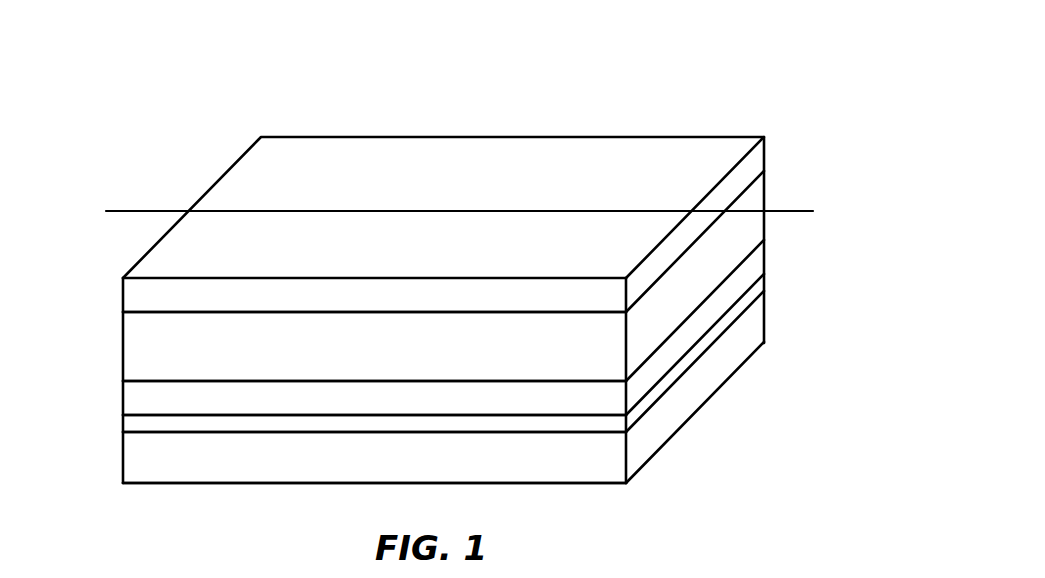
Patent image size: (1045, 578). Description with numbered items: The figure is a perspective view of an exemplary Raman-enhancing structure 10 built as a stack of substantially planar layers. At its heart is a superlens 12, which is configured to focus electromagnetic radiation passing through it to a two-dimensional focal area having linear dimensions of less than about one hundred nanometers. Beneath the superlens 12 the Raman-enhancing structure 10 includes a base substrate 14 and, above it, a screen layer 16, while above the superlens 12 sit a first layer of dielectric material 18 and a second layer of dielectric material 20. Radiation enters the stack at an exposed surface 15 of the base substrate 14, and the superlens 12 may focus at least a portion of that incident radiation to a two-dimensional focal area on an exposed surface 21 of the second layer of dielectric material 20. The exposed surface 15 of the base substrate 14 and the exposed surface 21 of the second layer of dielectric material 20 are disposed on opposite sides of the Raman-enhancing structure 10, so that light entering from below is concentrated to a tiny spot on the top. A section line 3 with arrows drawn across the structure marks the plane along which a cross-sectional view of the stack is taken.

The Raman-enhancing structure 10 is at (771, 92).
The exposed surface of the second layer of dielectric material 21 is at (180, 252).
The second layer of dielectric material 20 is at (143, 296).
The superlens 12 is at (153, 347).
The first layer of dielectric material 18 is at (142, 397).
The screen layer 16 is at (137, 422).
The base substrate 14 is at (140, 456).
The exposed surface of the base substrate 15 is at (174, 485).
The section line 3- 3 is at (106, 211).